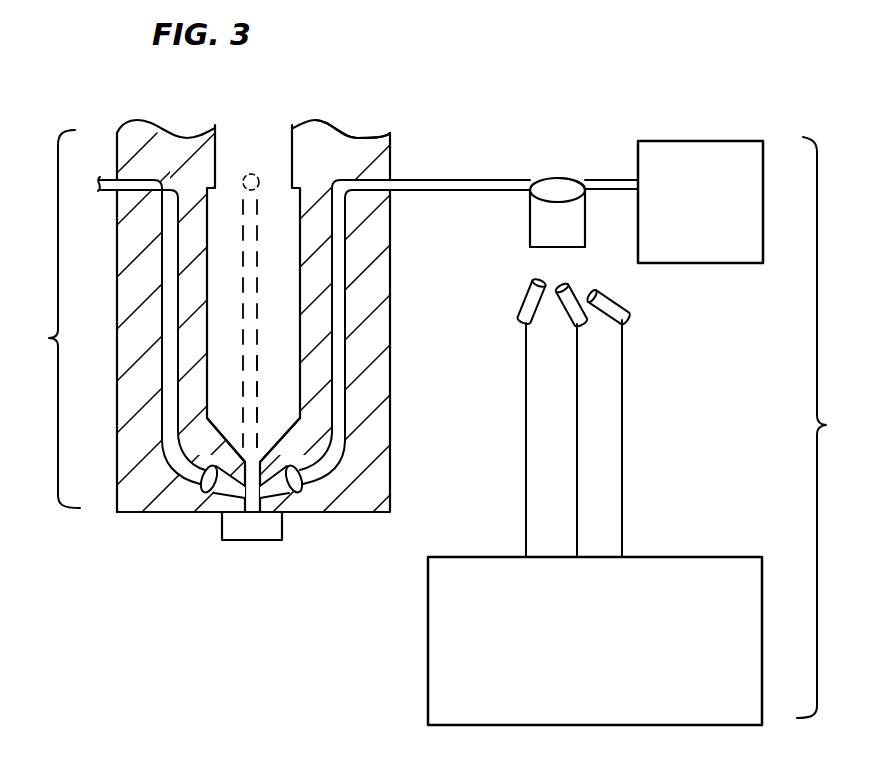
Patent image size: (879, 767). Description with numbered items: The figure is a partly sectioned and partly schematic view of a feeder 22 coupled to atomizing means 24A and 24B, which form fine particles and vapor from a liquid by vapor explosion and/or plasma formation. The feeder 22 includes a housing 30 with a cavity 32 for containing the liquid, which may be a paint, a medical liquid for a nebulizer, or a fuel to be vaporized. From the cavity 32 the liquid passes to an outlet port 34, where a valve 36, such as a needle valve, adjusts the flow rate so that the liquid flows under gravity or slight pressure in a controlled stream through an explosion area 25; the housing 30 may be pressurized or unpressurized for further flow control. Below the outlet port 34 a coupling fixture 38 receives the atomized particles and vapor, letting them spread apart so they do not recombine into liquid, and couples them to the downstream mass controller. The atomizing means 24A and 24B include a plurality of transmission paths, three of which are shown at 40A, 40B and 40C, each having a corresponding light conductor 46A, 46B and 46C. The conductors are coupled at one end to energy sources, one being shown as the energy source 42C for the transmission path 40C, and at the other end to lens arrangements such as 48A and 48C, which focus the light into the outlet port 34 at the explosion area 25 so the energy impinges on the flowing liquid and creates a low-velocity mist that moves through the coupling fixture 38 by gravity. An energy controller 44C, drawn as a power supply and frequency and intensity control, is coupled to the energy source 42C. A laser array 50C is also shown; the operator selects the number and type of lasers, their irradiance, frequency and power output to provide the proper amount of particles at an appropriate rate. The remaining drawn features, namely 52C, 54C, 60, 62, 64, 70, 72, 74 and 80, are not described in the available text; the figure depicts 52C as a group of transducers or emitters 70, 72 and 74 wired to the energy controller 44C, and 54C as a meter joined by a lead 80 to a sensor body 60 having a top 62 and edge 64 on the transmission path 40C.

The feeder 22 is at (358, 89).
The atomizing means 24A is at (832, 427).
The atomizing means 24B is at (46, 319).
The explosion area 25 is at (200, 524).
The housing 30 is at (160, 506).
The cavity 32 is at (268, 228).
The outlet port 34 is at (219, 514).
The valve 36 is at (257, 460).
The coupling fixture 38 is at (283, 538).
The transmission path 40A is at (106, 179).
The transmission path 40B is at (258, 172).
The transmission path 40C is at (398, 178).
The energy source 42C is at (530, 255).
The energy controller 44C is at (750, 647).
The light conductor 46A is at (168, 259).
The light conductor 46B is at (258, 362).
The light conductor 46C is at (345, 338).
The lens arrangement 48A is at (200, 480).
The lens arrangement 48C is at (302, 482).
The laser array 50C is at (545, 190).
The transducer array 52C is at (568, 415).
The meter 54C is at (716, 149).
The sensor body 60 is at (585, 238).
The sensor diaphragm 62 is at (551, 178).
The sensor top edge 64 is at (581, 180).
The first transducer 70 is at (518, 313).
The second transducer 72 is at (573, 318).
The third transducer 74 is at (632, 313).
The sensor lead 80 is at (627, 189).